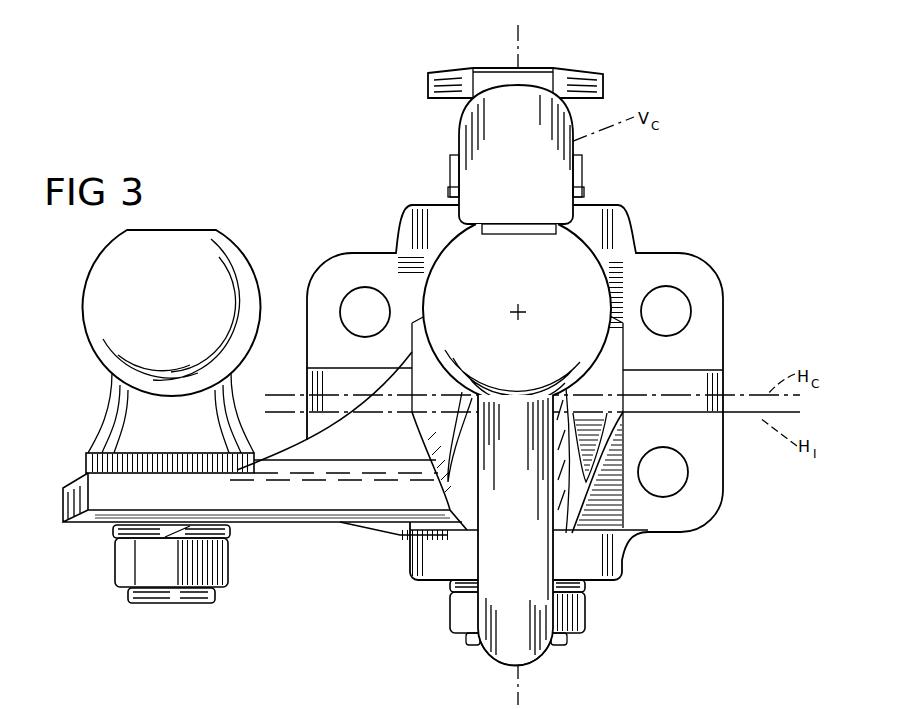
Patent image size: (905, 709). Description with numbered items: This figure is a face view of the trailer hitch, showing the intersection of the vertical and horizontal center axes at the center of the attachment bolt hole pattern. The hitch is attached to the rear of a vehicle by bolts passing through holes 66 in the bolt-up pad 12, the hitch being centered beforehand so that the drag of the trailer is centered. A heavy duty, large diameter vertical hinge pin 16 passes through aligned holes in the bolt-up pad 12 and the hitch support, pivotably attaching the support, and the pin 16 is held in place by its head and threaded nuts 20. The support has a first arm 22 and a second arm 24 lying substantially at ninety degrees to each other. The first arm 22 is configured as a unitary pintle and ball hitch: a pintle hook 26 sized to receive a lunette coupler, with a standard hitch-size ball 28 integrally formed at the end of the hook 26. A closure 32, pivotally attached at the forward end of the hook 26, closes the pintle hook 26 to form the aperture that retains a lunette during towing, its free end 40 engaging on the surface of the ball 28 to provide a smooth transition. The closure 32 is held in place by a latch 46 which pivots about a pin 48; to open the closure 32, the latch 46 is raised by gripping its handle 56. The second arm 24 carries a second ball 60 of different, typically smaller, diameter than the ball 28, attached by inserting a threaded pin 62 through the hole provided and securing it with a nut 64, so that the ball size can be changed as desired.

The bolt-up pad 12 is at (701, 260).
The vertical hinge pin 16 is at (564, 645).
The threaded nuts 20 is at (580, 614).
The first arm 22 is at (492, 658).
The second arm 24 is at (65, 523).
The pintle hook 26 is at (517, 572).
The ball 28 is at (562, 276).
The closure 32 is at (470, 148).
The free end of closure 40 is at (478, 228).
The latch 46 is at (538, 67).
The pin 48 is at (583, 172).
The handle 56 is at (605, 80).
The second ball 60 is at (179, 294).
The threaded pin 62 is at (156, 605).
The nut 64 is at (122, 565).
The holes 66 is at (360, 297).